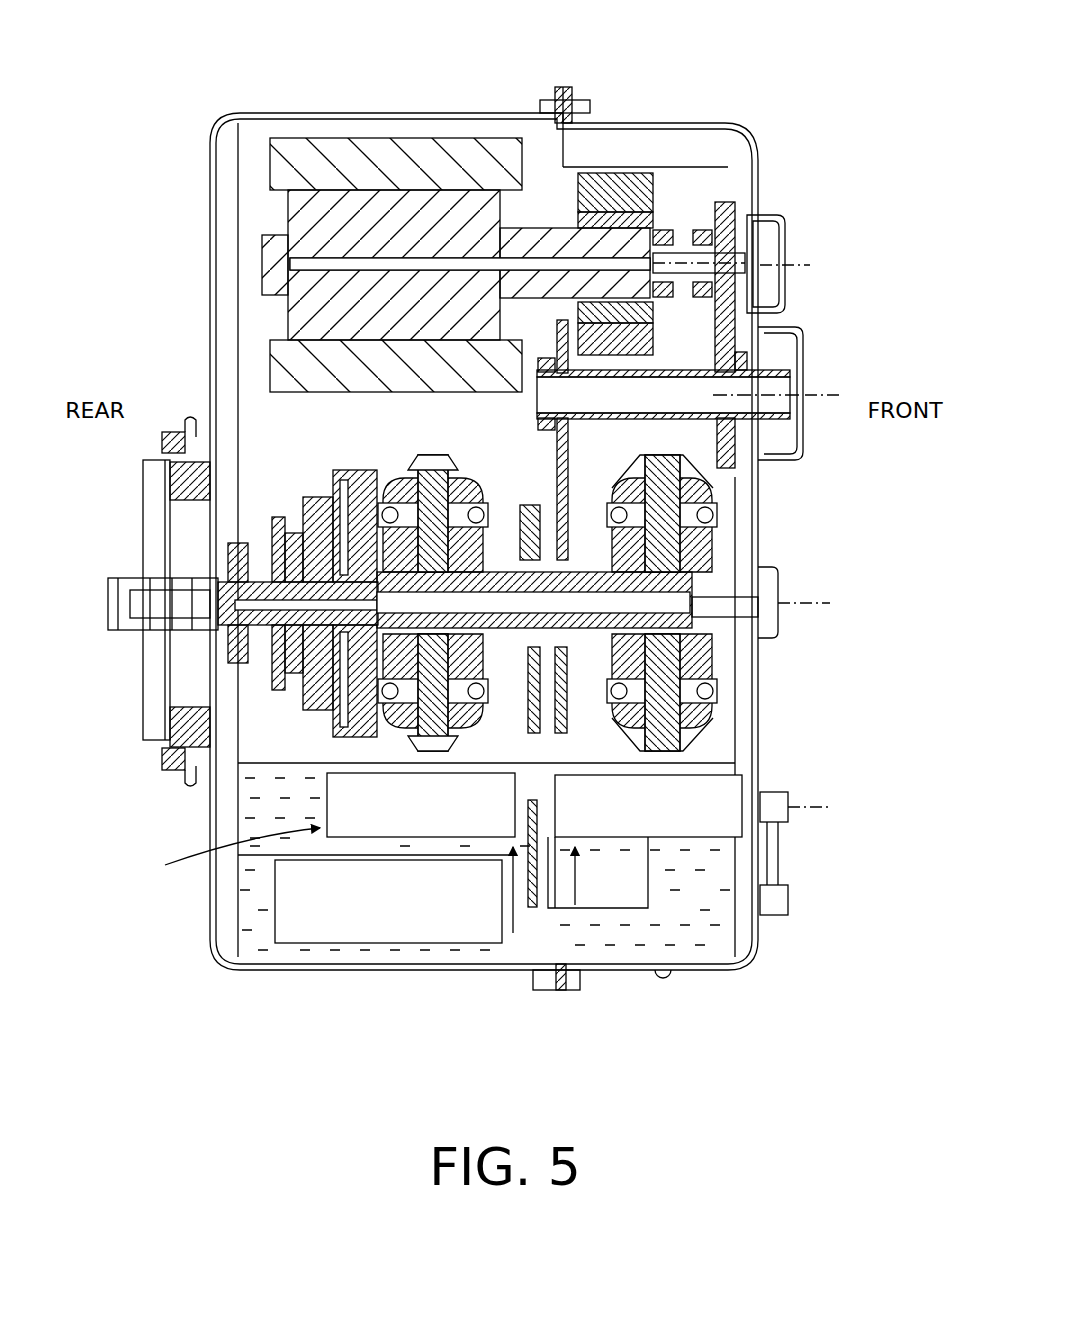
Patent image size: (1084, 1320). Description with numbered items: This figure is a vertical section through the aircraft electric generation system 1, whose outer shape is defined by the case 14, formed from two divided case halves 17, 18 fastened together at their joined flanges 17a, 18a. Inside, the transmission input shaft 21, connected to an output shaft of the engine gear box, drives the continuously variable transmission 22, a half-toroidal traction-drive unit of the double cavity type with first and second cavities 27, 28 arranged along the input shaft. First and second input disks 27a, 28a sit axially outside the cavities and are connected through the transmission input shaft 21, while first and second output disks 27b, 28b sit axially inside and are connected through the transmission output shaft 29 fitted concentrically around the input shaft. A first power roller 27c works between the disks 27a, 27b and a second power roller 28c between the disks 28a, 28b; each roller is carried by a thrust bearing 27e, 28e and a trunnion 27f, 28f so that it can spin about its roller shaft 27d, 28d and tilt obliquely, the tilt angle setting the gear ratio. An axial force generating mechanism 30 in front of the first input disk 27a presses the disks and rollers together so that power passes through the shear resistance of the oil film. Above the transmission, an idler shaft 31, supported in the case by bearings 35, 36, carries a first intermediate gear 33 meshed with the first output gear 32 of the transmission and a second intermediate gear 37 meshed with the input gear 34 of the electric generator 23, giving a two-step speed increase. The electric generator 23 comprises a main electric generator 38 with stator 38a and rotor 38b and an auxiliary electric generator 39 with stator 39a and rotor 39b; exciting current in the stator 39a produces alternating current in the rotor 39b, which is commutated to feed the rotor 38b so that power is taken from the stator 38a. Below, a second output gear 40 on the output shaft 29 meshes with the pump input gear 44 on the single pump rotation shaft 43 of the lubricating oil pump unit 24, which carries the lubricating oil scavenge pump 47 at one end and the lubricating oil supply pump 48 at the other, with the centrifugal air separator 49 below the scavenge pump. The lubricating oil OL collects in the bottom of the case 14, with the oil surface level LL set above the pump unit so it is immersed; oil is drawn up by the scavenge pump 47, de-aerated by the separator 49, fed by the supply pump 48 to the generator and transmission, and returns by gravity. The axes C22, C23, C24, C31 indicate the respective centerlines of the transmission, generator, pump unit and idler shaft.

The aircraft electric generation system 1 is at (440, 100).
The case 14 is at (200, 930).
The case half 17 is at (212, 310).
The case half 18 is at (745, 955).
The flange 17a is at (557, 985).
The flange 18a is at (565, 985).
The transmission input shaft 21 is at (125, 578).
The continuously variable transmission 22 is at (455, 455).
The electric generator 23 is at (670, 208).
The lubricating oil pump unit 24 is at (226, 850).
The first cavity 27 is at (403, 482).
The first input disk 27a is at (345, 735).
The first output disk 27b is at (490, 700).
The first power roller 27c is at (405, 515).
The roller shaft 27d is at (433, 750).
The thrust bearing 27e is at (345, 700).
The trunnion 27f is at (420, 470).
The second cavity 28 is at (652, 494).
The second input disk 28a is at (735, 710).
The second output disk 28b is at (702, 693).
The second power roller 28c is at (720, 530).
The roller shaft 28d is at (700, 545).
The thrust bearing 28e is at (478, 510).
The trunnion 28f is at (635, 480).
The transmission output shaft 29 is at (560, 470).
The axial force generating mechanism 30 is at (302, 594).
The idler shaft 31 is at (780, 385).
The first output gear 32 is at (598, 851).
The first intermediate gear 33 is at (545, 358).
The input gear 34 is at (735, 210).
The bearing 35 is at (570, 415).
The bearing 36 is at (760, 355).
The second intermediate gear 37 is at (738, 455).
The main electric generator 38 is at (388, 224).
The stator 38a is at (375, 150).
The rotor 38b is at (268, 262).
The auxiliary electric generator 39 is at (655, 200).
The stator 39a is at (630, 185).
The rotor 39b is at (680, 240).
The second output gear 40 is at (530, 508).
The pump rotation shaft 43 is at (525, 800).
The pump input gear 44 is at (533, 905).
The lubricating oil scavenge pump 47 is at (380, 1000).
The lubricating oil supply pump 48 is at (745, 807).
The centrifugal air separator 49 is at (330, 930).
The oil surface level LL is at (740, 763).
The lubricating oil OL is at (258, 800).
The main shaft axis C22 is at (800, 603).
The motor gear axis C23 is at (800, 265).
The axis C24 is at (800, 807).
The output shaft axis C31 is at (810, 395).